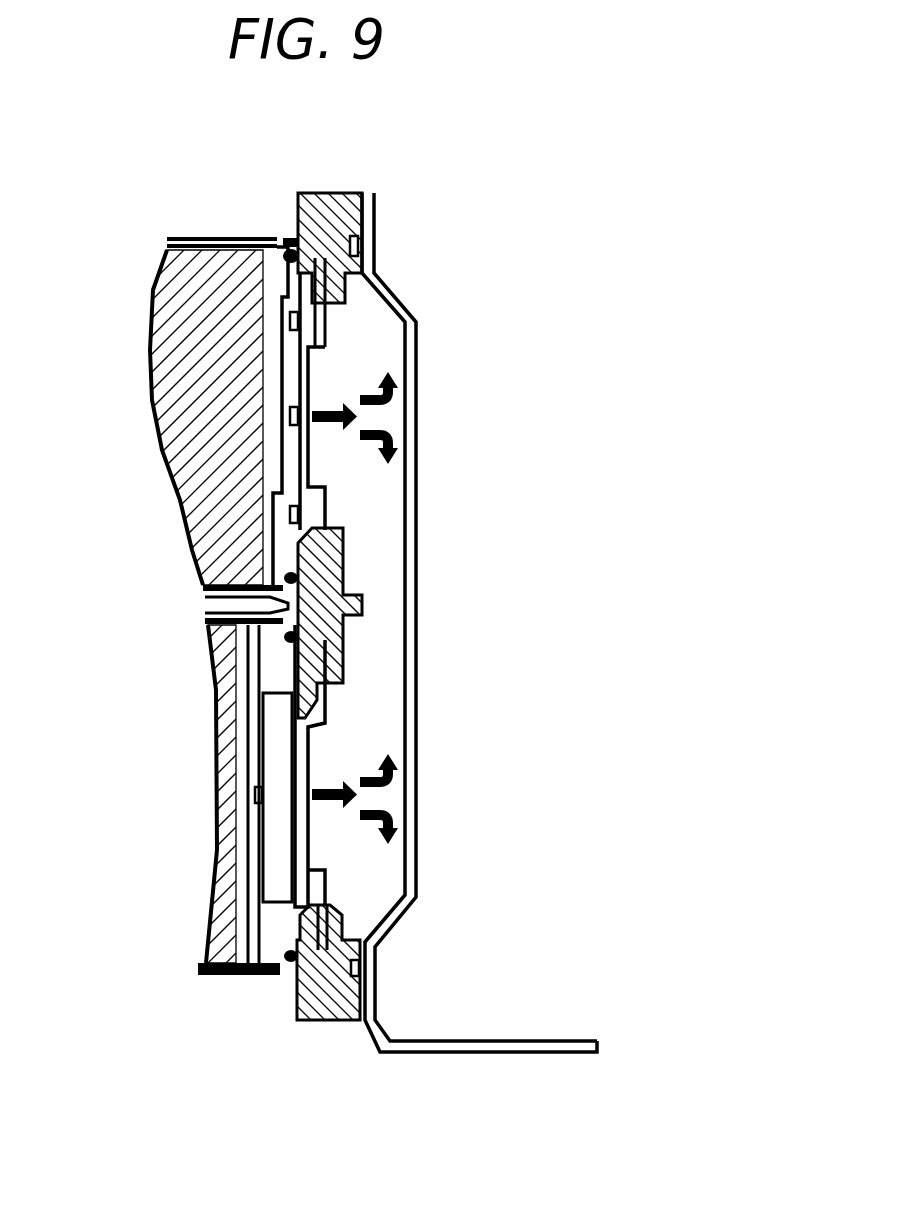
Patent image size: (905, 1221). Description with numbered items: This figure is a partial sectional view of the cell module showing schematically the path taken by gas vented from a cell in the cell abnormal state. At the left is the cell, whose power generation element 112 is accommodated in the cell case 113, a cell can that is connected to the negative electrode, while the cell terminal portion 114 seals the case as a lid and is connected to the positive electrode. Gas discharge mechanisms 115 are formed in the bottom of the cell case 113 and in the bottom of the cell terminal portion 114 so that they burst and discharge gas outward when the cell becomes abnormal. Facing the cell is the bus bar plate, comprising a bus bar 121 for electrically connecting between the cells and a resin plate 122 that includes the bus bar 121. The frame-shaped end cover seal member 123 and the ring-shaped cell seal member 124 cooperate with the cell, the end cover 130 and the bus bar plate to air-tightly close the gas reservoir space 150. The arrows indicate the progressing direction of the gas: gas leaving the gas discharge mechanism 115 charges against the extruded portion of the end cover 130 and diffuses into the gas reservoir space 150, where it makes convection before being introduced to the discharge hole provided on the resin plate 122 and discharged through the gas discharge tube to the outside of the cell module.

The power generation element 112 is at (183, 346).
The cell case 113 is at (278, 287).
The cell terminal portion 114 is at (290, 750).
The gas discharge mechanism 115 is at (282, 318).
The bus bar 121 is at (327, 707).
The resin plate 122 is at (358, 193).
The end cover seal member 123 is at (357, 243).
The cell seal member 124 is at (285, 240).
The end cover 130 is at (413, 460).
The gas reservoir space 150 is at (380, 582).